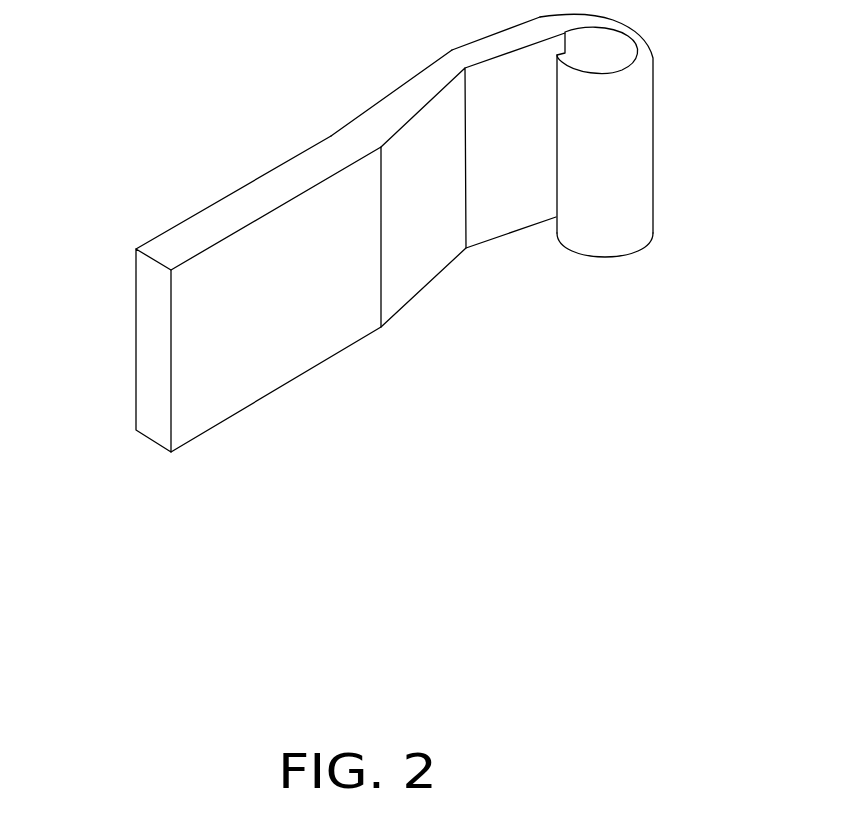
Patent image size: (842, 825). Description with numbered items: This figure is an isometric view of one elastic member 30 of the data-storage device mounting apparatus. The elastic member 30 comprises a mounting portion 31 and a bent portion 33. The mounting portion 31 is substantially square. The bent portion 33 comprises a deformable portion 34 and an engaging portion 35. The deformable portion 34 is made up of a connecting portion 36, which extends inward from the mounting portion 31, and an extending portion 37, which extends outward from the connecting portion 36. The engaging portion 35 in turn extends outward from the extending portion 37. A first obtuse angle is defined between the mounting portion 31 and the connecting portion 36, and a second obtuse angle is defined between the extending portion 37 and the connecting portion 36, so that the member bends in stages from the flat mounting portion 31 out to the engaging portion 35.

The elastic member 30 is at (307, 62).
The mounting portion 31 is at (150, 384).
The bent portion 33 is at (629, 333).
The deformable portion 34 is at (544, 304).
The engaging portion 35 is at (618, 236).
The connecting portion 36 is at (420, 266).
The extending portion 37 is at (492, 220).